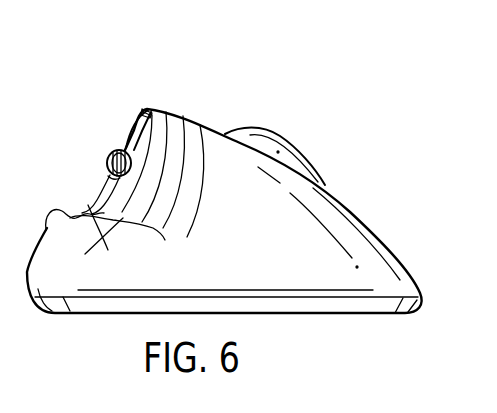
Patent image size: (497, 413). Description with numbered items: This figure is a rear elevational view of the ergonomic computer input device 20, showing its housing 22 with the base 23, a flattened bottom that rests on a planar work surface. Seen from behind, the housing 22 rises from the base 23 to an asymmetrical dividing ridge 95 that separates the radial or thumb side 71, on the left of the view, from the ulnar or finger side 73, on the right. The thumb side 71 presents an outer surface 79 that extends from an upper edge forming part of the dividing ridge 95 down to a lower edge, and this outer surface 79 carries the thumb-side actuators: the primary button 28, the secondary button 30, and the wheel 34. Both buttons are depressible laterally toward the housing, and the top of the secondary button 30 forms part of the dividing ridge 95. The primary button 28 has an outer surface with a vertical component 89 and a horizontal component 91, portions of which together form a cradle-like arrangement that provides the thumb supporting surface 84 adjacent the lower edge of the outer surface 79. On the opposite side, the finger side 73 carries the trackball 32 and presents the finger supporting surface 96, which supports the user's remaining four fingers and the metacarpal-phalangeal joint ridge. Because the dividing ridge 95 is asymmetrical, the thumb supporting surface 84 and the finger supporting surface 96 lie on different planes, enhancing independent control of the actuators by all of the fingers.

The computer input device 20 is at (314, 101).
The housing 22 is at (186, 124).
The base 23 is at (348, 318).
The primary button 28 is at (130, 252).
The secondary button 30 is at (128, 140).
The trackball 32 is at (294, 159).
The wheel 34 is at (108, 157).
The thumb side 71 is at (102, 175).
The finger side 73 is at (350, 201).
The outer surface 79 is at (123, 147).
The thumb supporting surface 84 is at (106, 246).
The vertical component 89 is at (178, 204).
The horizontal component 91 is at (55, 225).
The dividing ridge 95 is at (145, 112).
The finger supporting surface 96 is at (383, 232).